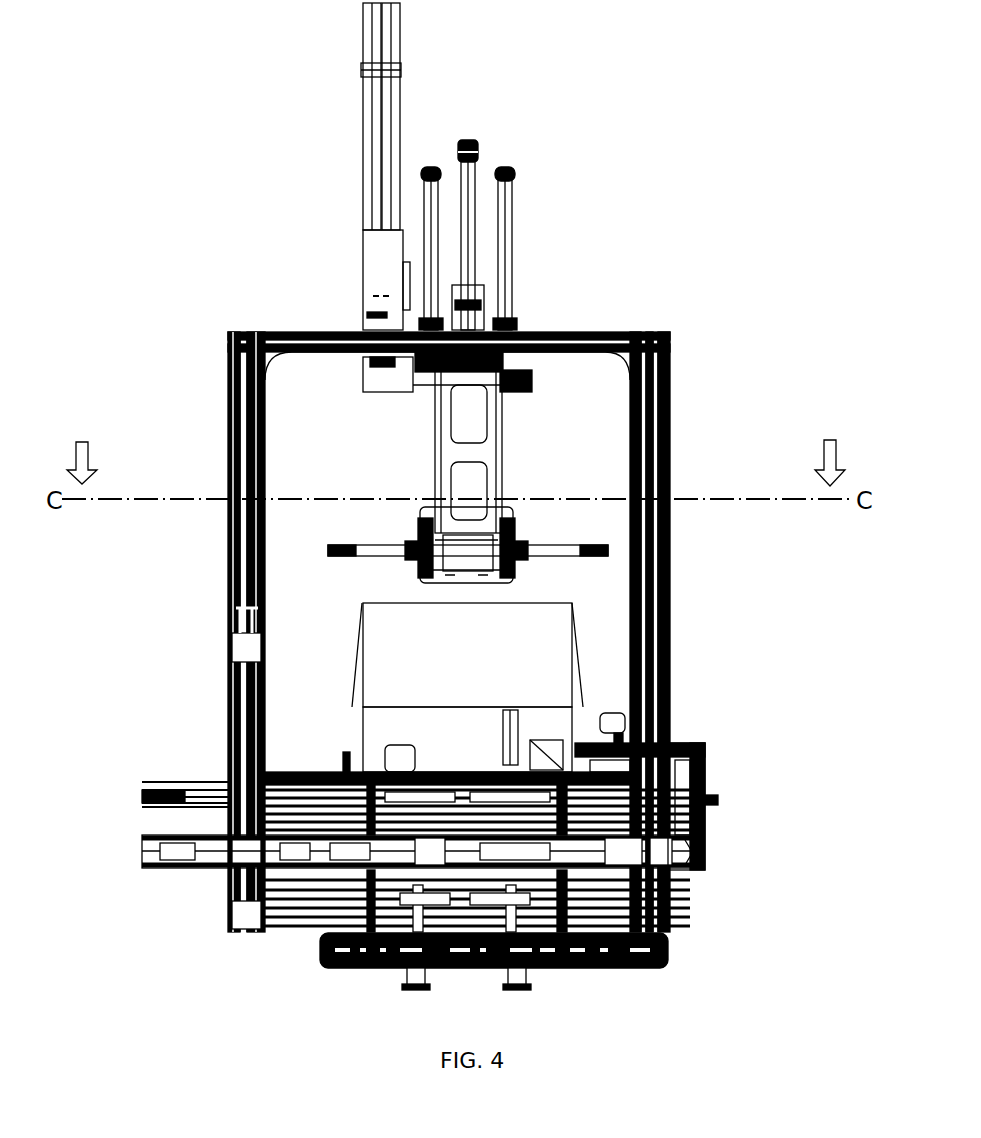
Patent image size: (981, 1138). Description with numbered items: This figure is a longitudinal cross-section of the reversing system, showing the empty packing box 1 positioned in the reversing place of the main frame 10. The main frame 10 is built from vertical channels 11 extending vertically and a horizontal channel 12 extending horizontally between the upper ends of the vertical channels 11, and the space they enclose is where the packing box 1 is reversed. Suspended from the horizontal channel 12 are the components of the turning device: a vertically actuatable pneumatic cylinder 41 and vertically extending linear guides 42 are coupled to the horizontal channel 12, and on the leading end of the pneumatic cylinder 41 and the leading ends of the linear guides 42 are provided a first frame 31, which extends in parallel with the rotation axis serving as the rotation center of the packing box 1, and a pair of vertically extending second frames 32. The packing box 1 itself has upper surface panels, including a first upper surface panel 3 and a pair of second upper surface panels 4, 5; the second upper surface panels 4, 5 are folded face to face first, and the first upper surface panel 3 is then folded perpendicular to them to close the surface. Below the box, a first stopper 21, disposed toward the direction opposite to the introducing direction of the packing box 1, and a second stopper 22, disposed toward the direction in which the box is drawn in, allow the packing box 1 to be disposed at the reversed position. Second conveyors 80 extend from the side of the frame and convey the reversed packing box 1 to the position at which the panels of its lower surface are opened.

The packing box 1 is at (450, 730).
The first upper surface panel 3 is at (450, 672).
The second upper surface panel 4 is at (345, 645).
The second upper surface panel 5 is at (588, 668).
The main frame 10 is at (563, 589).
The vertical channel 11 is at (683, 478).
The horizontal channel 12 is at (598, 315).
The first stopper 21 is at (700, 855).
The second stopper 22 is at (718, 799).
The first frame 31 is at (550, 379).
The second frame 32 is at (420, 446).
The pneumatic cylinder 41 is at (487, 142).
The linear guide 42 is at (447, 205).
The second conveyor 80 is at (163, 762).